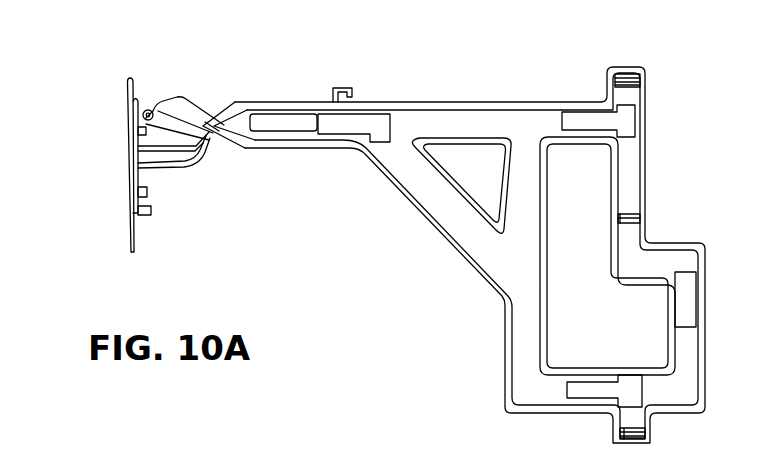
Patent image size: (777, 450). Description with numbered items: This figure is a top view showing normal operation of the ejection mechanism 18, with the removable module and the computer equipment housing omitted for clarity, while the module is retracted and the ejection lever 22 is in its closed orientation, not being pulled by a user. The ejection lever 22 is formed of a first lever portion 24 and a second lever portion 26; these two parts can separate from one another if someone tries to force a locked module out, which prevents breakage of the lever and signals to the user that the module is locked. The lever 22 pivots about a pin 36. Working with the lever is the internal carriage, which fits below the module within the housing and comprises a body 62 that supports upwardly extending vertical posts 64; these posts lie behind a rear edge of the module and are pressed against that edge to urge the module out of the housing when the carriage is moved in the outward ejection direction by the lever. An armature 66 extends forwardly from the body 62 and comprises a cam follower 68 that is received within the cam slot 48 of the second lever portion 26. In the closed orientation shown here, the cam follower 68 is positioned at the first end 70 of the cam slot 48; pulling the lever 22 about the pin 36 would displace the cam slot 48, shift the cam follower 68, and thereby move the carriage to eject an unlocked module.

The ejection mechanism 18 is at (57, 91).
The ejection lever 22 is at (172, 214).
The first lever portion 24 is at (133, 193).
The second lever portion 26 is at (190, 163).
The pin 36 is at (147, 109).
The cam slot 48 is at (185, 100).
The body 62 is at (660, 218).
The vertical posts 64 is at (613, 78).
The armature 66 is at (500, 100).
The cam follower 68 is at (243, 104).
The first end 70 is at (215, 110).